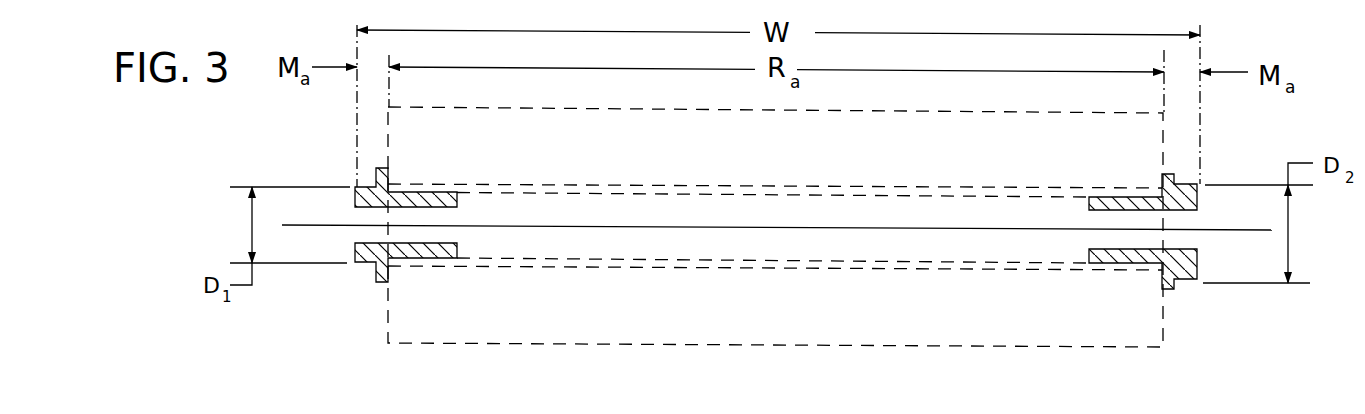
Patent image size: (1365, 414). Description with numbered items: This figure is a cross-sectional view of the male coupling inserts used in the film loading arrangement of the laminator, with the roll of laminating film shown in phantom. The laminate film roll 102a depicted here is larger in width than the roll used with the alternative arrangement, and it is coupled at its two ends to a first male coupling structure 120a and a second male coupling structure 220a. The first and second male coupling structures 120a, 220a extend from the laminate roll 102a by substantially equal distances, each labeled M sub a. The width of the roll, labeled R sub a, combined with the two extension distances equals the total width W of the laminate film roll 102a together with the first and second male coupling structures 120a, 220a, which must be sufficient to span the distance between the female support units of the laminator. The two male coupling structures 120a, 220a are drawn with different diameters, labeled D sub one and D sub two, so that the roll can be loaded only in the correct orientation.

The laminate film roll 102a is at (753, 347).
The first male coupling structure 120a is at (357, 280).
The second male coupling structure 220a is at (1186, 294).